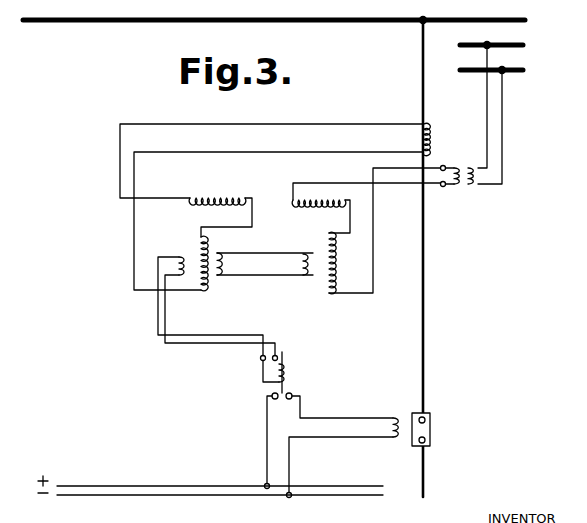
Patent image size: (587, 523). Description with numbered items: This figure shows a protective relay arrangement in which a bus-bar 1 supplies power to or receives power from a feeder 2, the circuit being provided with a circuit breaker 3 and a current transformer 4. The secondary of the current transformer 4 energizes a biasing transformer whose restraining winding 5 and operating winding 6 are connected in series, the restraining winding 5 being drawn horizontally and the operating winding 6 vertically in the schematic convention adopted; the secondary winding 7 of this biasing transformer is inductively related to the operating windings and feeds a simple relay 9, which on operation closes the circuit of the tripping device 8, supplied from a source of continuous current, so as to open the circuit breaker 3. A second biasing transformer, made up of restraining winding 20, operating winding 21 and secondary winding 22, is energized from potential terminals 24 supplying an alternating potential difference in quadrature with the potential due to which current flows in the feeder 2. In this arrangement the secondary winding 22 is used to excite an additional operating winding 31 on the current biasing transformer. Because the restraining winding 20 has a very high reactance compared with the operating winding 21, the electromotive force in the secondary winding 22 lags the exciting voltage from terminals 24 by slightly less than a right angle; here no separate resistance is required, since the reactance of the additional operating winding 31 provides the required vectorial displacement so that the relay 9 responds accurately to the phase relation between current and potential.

The bus-bar 1 is at (275, 17).
The feeder 2 is at (425, 300).
The circuit breaker 3 is at (431, 431).
The current transformer 4 is at (432, 142).
The restraining winding 5 is at (212, 196).
The operating winding 6 is at (199, 250).
The secondary winding 7 is at (178, 280).
The tripping device 8 is at (394, 417).
The relay 9 is at (291, 372).
The restraining winding 20 is at (312, 207).
The operating winding 21 is at (338, 262).
The secondary winding 22 is at (301, 280).
The potential terminals 24 is at (445, 187).
The additional operating winding 31 is at (232, 278).